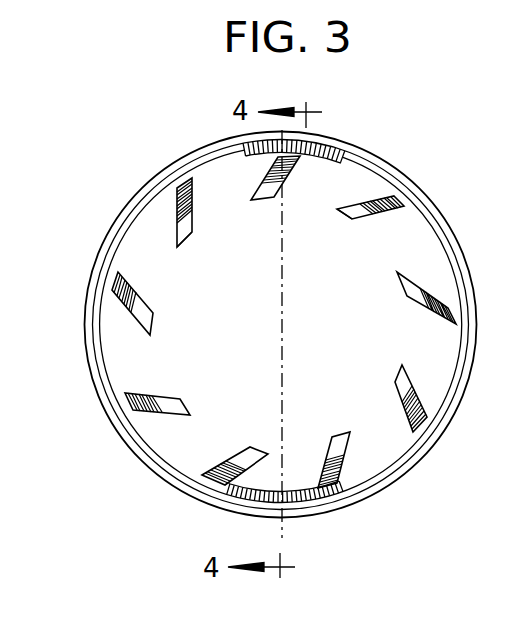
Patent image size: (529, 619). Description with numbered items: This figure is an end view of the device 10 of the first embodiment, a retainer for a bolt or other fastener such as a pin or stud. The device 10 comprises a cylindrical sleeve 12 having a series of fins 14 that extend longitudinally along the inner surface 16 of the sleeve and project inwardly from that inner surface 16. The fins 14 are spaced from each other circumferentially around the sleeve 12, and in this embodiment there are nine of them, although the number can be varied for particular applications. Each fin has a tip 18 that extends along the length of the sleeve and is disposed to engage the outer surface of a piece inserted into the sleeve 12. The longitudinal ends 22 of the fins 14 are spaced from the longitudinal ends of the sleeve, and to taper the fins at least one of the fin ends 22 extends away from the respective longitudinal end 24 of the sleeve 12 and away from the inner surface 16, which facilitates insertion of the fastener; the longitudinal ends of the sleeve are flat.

The device 10 is at (114, 192).
The cylindrical sleeve 12 is at (414, 177).
The fins 14 is at (285, 186).
The inner surface 16 is at (107, 354).
The tips 18 is at (183, 243).
The longitudinal ends of the fins 22 is at (388, 208).
The longitudinal end of the sleeve 24 is at (340, 157).